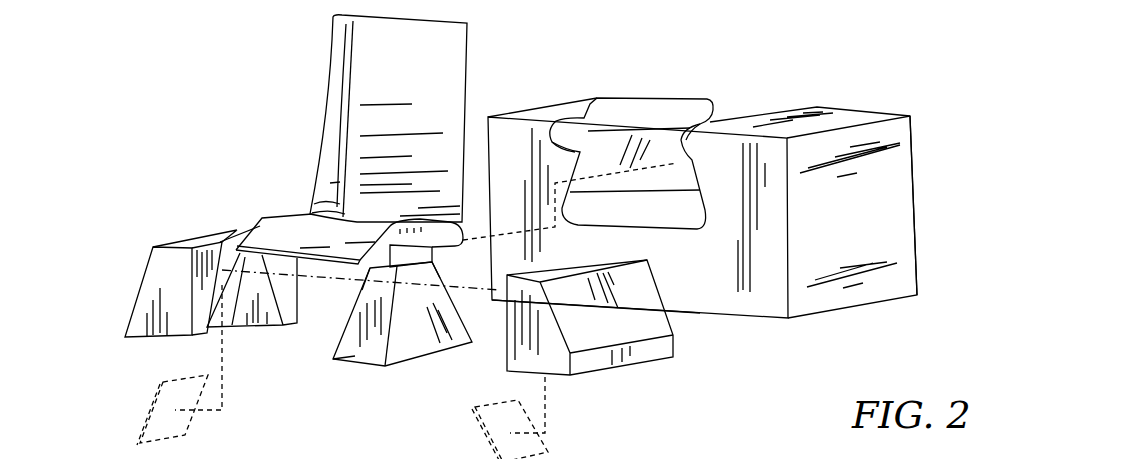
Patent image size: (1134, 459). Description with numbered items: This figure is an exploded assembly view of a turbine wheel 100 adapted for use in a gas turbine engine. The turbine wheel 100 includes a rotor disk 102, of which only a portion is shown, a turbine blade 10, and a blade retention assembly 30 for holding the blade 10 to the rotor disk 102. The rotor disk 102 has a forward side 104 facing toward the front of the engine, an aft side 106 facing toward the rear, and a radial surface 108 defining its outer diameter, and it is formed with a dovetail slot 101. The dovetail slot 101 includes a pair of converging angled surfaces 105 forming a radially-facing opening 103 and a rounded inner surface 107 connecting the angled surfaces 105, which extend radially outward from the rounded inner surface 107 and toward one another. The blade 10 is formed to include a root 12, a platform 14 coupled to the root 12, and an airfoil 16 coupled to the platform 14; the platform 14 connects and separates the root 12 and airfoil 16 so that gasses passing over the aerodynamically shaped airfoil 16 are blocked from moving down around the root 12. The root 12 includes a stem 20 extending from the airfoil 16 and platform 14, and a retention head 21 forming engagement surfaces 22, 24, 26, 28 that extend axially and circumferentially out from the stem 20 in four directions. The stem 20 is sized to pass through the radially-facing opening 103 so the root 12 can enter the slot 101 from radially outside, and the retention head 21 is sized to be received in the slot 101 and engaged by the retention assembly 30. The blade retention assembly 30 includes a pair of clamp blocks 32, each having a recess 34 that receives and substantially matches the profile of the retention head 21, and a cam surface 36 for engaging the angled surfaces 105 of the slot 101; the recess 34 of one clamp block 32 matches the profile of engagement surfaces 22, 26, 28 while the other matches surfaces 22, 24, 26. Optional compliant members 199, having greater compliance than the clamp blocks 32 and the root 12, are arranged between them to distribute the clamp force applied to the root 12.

The turbine blade 10 is at (250, 90).
The root 12 is at (325, 382).
The platform 14 is at (272, 209).
The airfoil 16 is at (322, 102).
The stem 20 is at (411, 268).
The retention head 21 is at (330, 338).
The engagement surface 22 is at (363, 345).
The engagement surface 24 is at (473, 341).
The engagement surface 26 is at (448, 300).
The engagement surface 28 is at (353, 308).
The blade retention assembly 30 is at (133, 280).
The clamp block 32 is at (176, 236).
The recess 34 is at (231, 248).
The cam surface 36 is at (146, 272).
The turbine wheel 100 is at (882, 57).
The dovetail slot 101 is at (705, 234).
The rotor disk 102 is at (917, 157).
The radially-facing opening 103 is at (763, 108).
The forward side 104 is at (778, 278).
The angled surfaces 105 is at (578, 153).
The aft side 106 is at (918, 250).
The rounded inner surface 107 is at (668, 218).
The radial surface 108 is at (867, 117).
The compliant members 199 is at (157, 403).